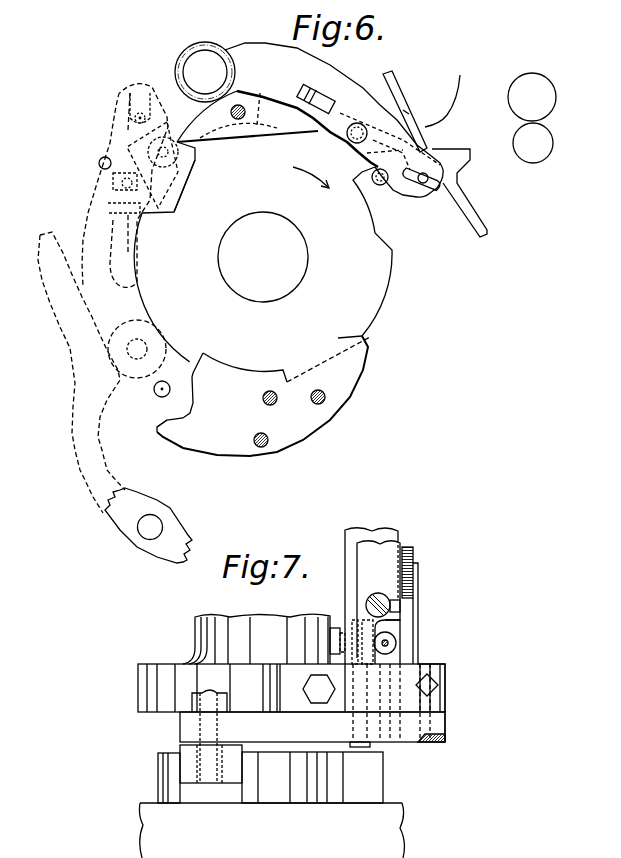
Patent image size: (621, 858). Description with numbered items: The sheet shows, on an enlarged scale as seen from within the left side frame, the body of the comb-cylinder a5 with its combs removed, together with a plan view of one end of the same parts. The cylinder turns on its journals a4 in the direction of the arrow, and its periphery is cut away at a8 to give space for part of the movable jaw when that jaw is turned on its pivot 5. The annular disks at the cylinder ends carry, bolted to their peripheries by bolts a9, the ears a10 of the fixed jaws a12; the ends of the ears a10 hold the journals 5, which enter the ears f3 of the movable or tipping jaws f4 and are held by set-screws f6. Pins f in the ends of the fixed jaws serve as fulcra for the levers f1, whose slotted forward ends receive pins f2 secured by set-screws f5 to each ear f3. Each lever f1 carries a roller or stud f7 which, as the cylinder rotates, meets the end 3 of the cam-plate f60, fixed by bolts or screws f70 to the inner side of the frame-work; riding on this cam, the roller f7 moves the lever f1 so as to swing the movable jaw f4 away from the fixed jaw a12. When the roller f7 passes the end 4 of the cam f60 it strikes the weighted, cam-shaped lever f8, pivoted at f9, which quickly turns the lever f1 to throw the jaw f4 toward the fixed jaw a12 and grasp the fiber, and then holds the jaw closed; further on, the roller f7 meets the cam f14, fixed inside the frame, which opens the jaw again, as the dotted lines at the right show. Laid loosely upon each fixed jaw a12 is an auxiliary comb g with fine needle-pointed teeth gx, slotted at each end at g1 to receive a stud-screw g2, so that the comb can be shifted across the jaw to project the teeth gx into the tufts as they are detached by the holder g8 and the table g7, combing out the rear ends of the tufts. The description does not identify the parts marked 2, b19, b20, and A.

In FIG. 6, the comb-cylinder a5 is at (263, 252).
In FIG. 7, the comb-cylinder a5 is at (275, 687).
In FIG. 6, the journals of the comb-cylinder a4 is at (263, 257).
In FIG. 6, the cut-away of the comb-cylinder a8 is at (185, 178).
In FIG. 6, the pivot journals 5 is at (377, 188).
In FIG. 6, the pawl slot 2 is at (421, 185).
In FIG. 6, the end of cam-plate 3 is at (372, 348).
In FIG. 6, the cam-plate f60 is at (344, 392).
In FIG. 7, the cam-plate f60 is at (375, 785).
In FIG. 6, the bolts or screws f70 is at (326, 398).
In FIG. 6, the end of cam 4 is at (160, 433).
In FIG. 6, the roller or stud f7 is at (203, 44).
In FIG. 7, the roller or stud f7 is at (188, 768).
In FIG. 6, the lever f1 is at (334, 120).
In FIG. 7, the lever f1 is at (312, 727).
In FIG. 6, the cam f14 is at (247, 116).
In FIG. 7, the cam f14 is at (247, 795).
In FIG. 6, the bolts a9 is at (324, 98).
In FIG. 7, the bolts a9 is at (312, 689).
In FIG. 6, the holder g8 is at (416, 131).
In FIG. 6, the set-screws f6 is at (445, 91).
In FIG. 6, the table g7 is at (459, 183).
In FIG. 6, the roller b20 is at (556, 97).
In FIG. 6, the roller b19 is at (553, 143).
In FIG. 6, the cam-shaped lever f8 is at (110, 520).
In FIG. 6, the pivot of cam-shaped lever f9 is at (145, 530).
In FIG. 7, the ears of the fixed jaws a10 is at (280, 664).
In FIG. 7, the pins f is at (372, 746).
In FIG. 7, the pins f2 is at (428, 743).
In FIG. 7, the set-screws f5 is at (433, 676).
In FIG. 7, the ears or hubs of the movable jaw f3 is at (440, 693).
In FIG. 7, the movable or tipping jaw f4 is at (388, 640).
In FIG. 7, the fixed jaw a12 is at (372, 611).
In FIG. 7, the auxiliary comb g is at (378, 599).
In FIG. 7, the needle-pointed teeth gx is at (403, 550).
In FIG. 7, the stud-screw g2 is at (366, 605).
In FIG. 7, the slot g1 is at (392, 604).
In FIG. 7, the base A is at (376, 836).